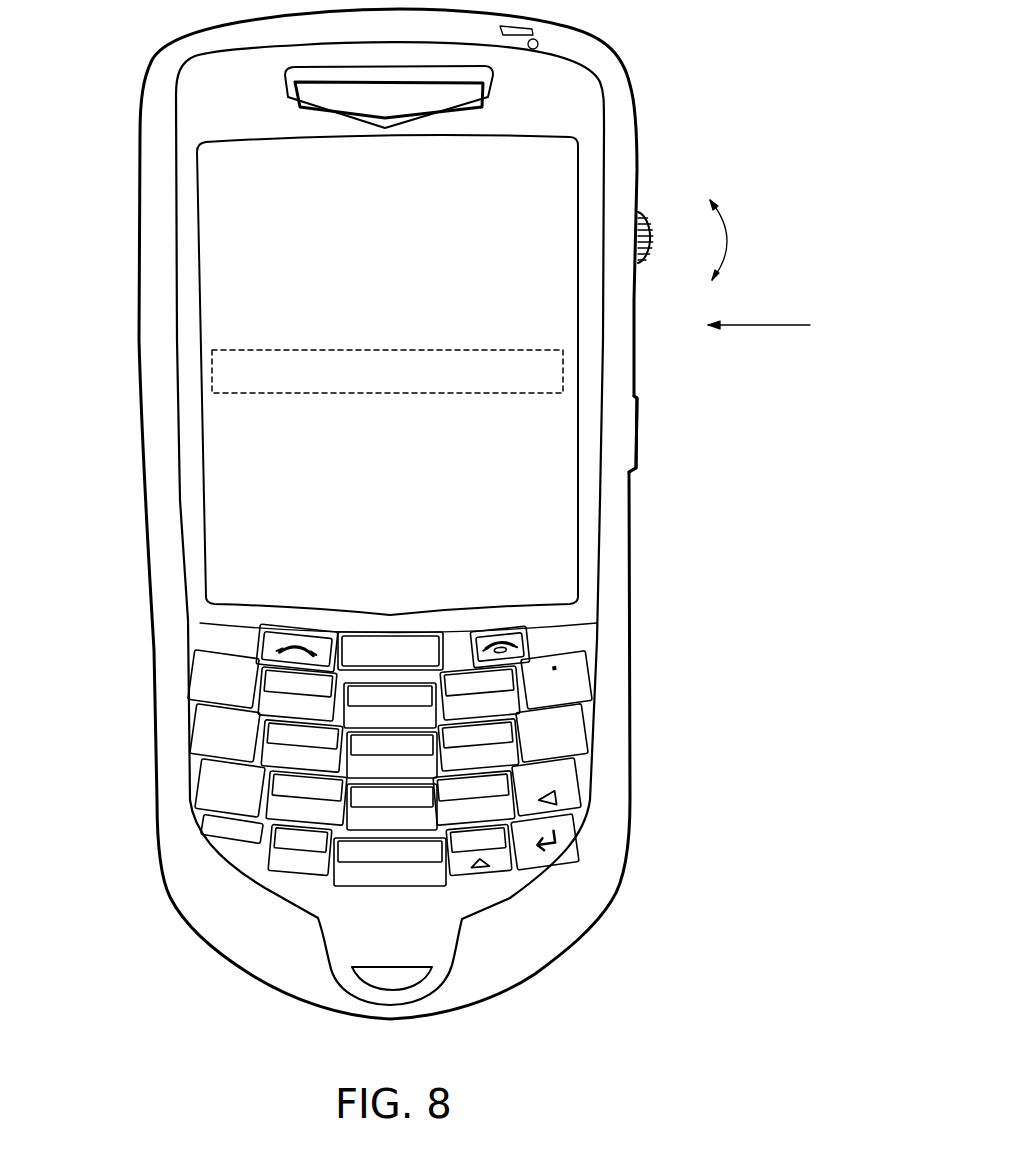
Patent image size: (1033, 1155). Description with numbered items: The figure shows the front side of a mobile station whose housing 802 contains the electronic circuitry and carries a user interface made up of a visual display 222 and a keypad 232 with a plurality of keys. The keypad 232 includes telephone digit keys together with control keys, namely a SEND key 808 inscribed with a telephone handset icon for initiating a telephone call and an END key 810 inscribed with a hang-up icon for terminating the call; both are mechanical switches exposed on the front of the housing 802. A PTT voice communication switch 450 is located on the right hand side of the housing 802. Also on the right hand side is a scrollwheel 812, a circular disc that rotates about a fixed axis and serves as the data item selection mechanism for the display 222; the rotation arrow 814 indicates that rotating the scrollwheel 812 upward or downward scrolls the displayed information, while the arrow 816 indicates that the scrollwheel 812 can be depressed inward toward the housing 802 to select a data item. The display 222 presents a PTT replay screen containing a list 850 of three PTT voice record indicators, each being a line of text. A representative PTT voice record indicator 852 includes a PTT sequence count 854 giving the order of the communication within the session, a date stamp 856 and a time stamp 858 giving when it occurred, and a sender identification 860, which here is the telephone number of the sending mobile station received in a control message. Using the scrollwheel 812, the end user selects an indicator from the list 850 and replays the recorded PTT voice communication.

The visual display 222 is at (233, 200).
The keypad 232 is at (509, 710).
The PTT voice communication switch 450 is at (635, 420).
The housing 802 is at (630, 110).
The SEND key 808 is at (273, 638).
The END key 810 is at (517, 637).
The scrollwheel 812 is at (647, 217).
The rotation arrow 814 is at (727, 240).
The arrow 816 is at (755, 327).
The list 850 is at (298, 314).
The PTT voice record indicator 852 is at (210, 377).
The PTT sequence count 854 is at (226, 302).
The date stamp 856 is at (295, 302).
The time stamp 858 is at (405, 302).
The sender identification 860 is at (502, 302).